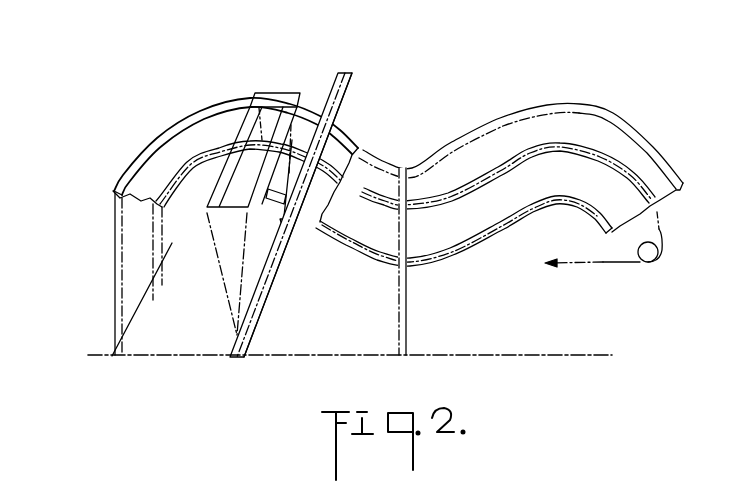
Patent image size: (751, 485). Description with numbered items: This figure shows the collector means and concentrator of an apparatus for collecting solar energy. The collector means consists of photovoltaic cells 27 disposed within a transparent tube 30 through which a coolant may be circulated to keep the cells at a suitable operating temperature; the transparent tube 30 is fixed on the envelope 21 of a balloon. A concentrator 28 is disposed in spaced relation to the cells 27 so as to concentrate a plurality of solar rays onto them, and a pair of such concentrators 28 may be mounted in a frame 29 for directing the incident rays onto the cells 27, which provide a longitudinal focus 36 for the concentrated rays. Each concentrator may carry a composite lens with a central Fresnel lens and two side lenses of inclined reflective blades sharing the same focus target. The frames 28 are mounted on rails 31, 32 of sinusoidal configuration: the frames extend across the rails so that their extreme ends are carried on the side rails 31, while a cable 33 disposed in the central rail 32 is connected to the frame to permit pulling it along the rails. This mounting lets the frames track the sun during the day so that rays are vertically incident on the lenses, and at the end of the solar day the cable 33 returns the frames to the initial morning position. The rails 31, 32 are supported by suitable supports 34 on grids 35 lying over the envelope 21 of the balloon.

The envelope 21 is at (89, 358).
The photovoltaic cells 27 is at (262, 294).
The concentrator 28 is at (254, 101).
The frame 29 is at (279, 93).
The transparent tube 30 is at (253, 323).
The side rails 31 is at (181, 122).
The central rail 32 is at (209, 153).
The cable 33 is at (190, 171).
The supports 34 is at (113, 270).
The grids 35 is at (143, 298).
The longitudinal focus 36 is at (277, 272).